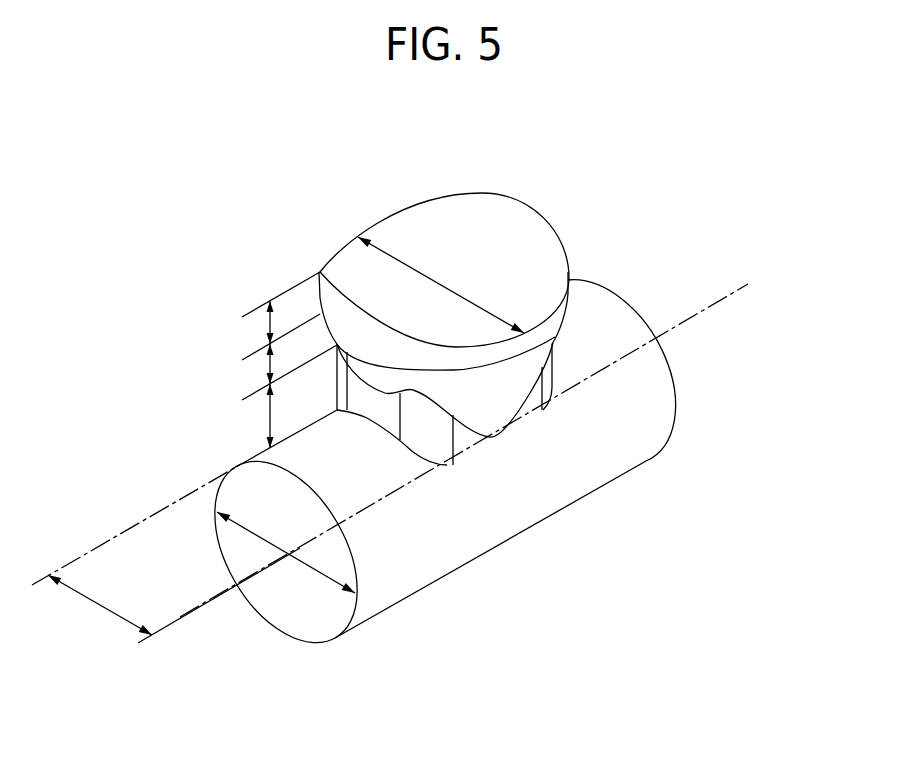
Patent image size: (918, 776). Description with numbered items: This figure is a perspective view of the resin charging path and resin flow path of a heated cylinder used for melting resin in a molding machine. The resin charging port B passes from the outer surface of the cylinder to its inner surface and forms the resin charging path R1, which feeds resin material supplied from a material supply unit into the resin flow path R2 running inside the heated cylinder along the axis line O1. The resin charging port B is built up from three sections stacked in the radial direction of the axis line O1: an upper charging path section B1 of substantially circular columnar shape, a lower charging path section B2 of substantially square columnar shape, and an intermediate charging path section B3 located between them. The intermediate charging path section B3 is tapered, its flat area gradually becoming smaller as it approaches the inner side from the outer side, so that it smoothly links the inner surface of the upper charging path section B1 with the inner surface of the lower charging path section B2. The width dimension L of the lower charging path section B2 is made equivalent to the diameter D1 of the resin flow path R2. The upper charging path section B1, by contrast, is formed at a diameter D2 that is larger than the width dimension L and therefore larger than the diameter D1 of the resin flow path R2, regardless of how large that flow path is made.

The resin charging port B is at (414, 192).
The resin charging path R1 is at (508, 186).
The resin flow path R2 is at (511, 551).
The axis line O1 is at (489, 438).
The diameter of the resin flow path D1 is at (307, 567).
The diameter of the upper charging path section D2 is at (443, 282).
The upper charging path section B1 is at (264, 326).
The lower charging path section B2 is at (264, 414).
The intermediate charging path section B3 is at (264, 369).
The width dimension of the lower charging path section L is at (95, 600).